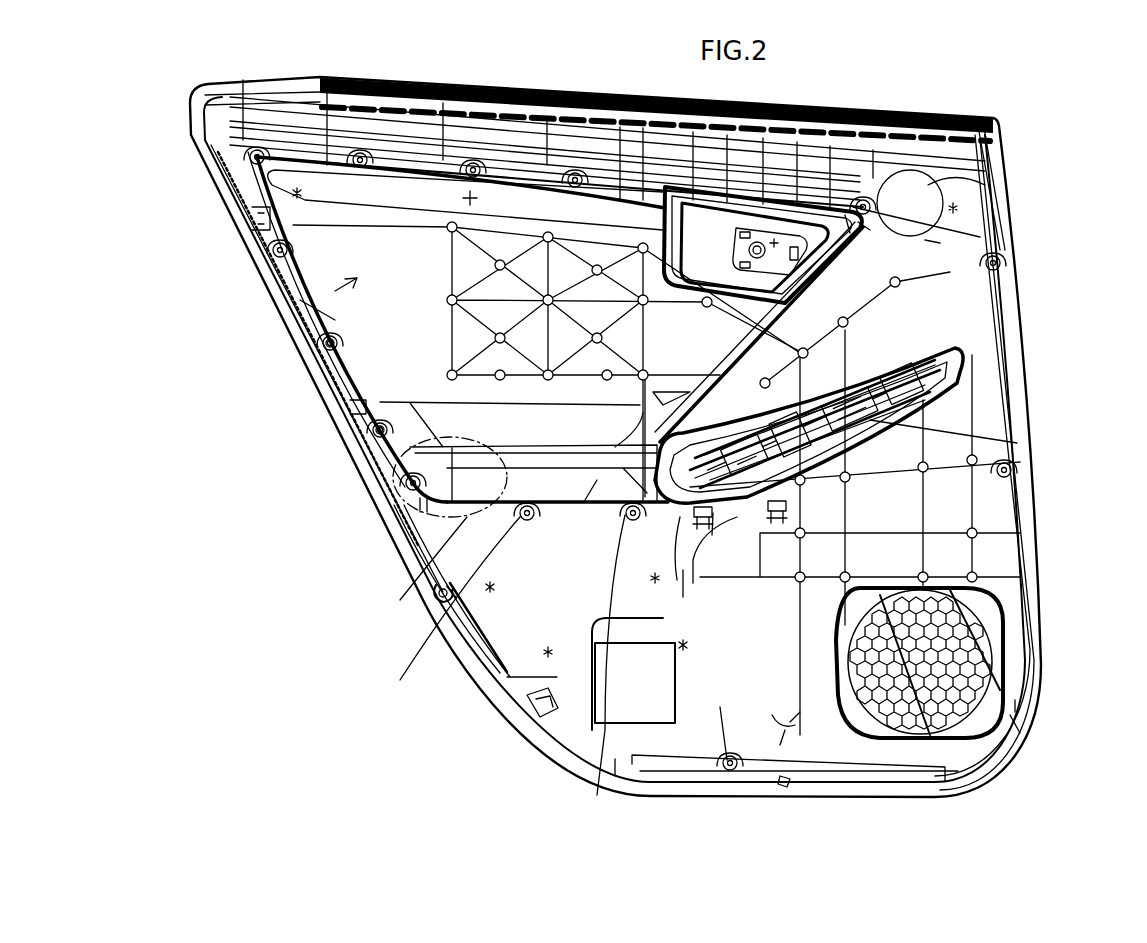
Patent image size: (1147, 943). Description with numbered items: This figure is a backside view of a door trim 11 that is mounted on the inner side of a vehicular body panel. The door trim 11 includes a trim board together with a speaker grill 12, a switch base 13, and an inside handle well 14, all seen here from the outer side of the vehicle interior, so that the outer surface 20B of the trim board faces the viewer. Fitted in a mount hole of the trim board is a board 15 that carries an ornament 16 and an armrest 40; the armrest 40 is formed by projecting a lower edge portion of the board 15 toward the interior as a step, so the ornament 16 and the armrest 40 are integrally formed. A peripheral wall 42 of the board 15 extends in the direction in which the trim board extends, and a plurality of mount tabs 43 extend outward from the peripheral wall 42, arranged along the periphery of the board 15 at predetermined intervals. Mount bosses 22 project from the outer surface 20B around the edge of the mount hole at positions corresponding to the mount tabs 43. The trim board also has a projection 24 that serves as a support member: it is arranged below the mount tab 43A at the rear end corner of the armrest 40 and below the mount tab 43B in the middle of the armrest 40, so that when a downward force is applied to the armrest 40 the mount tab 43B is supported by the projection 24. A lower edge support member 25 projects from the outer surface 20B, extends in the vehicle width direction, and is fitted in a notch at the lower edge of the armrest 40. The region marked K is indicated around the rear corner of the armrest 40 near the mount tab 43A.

The door trim 11 is at (999, 86).
The speaker grill 12 is at (995, 650).
The switch base 13 is at (910, 405).
The inside handle well 14 is at (962, 266).
The board 15 is at (327, 263).
The ornament 16 is at (330, 238).
The outer surface of the trim board 20B is at (577, 707).
The mount bosses 22 is at (322, 312).
The projection 24 is at (423, 510).
The lower edge support member 25 is at (430, 592).
The armrest 40 is at (575, 512).
The peripheral wall 42 is at (480, 647).
The mount tabs 43 is at (375, 430).
The mount tab 43A is at (405, 481).
The mount tab 43B is at (440, 600).
The enlarged region K is at (445, 520).